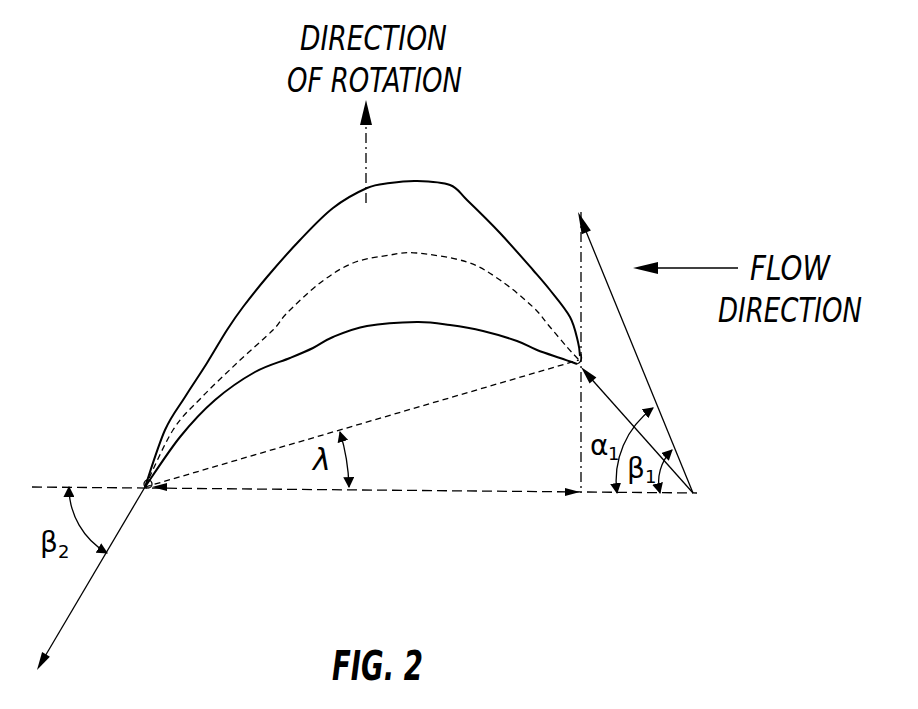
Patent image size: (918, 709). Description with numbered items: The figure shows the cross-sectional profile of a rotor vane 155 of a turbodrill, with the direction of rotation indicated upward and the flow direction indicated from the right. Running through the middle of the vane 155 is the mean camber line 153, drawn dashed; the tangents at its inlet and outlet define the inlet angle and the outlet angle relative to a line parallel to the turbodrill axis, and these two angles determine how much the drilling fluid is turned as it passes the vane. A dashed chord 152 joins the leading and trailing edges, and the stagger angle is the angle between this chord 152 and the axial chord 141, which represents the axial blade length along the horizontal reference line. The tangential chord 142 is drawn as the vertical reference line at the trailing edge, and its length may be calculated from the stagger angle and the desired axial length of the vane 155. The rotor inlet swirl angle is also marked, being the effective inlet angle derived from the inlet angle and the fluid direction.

The axial chord 141 is at (280, 492).
The tangential chord 142 is at (580, 420).
The chord 152 is at (445, 398).
The mean camber line 153 is at (402, 252).
The rotor vane 155 is at (393, 323).